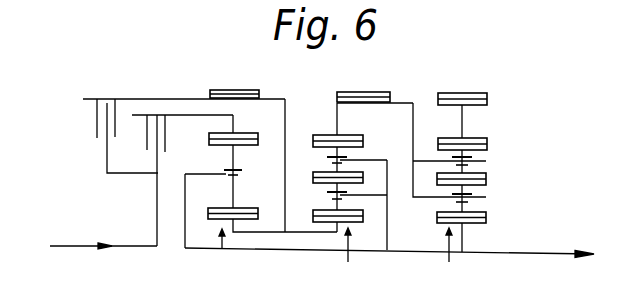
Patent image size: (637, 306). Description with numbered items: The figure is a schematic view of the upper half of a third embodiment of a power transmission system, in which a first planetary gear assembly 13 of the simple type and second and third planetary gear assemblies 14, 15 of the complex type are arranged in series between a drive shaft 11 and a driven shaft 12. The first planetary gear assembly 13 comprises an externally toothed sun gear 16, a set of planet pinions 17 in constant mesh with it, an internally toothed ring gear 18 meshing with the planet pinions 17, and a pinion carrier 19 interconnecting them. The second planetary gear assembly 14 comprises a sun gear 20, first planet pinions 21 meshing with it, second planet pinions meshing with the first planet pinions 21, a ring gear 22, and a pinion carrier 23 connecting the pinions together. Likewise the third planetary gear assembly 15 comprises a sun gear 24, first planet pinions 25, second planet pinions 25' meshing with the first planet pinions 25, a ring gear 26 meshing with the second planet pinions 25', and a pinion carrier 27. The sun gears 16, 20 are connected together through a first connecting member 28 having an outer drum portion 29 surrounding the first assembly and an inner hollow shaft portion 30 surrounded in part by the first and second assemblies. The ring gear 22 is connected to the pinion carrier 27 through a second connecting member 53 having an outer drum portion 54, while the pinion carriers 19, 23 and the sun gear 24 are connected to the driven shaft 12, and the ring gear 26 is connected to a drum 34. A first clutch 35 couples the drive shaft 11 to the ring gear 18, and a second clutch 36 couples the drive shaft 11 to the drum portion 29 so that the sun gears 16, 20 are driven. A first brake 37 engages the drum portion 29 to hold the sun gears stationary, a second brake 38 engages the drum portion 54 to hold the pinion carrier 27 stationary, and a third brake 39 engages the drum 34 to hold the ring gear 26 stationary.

The drive shaft 11 is at (67, 247).
The driven shaft 12 is at (543, 255).
The first planetary gear assembly 13 is at (217, 258).
The second planetary gear assembly 14 is at (346, 257).
The third planetary gear assembly 15 is at (441, 261).
The sun gear 16 is at (213, 222).
The planet pinions 17 is at (249, 146).
The ring gear 18 is at (248, 133).
The pinion carrier 19 is at (186, 188).
The sun gear 20 is at (358, 223).
The first planet pinions 21 is at (311, 150).
The ring gear 22 is at (318, 134).
The pinion carrier 23 is at (388, 242).
The sun gear 24 is at (487, 220).
The first planet pinions 25 is at (484, 192).
The second planet pinions 25' is at (500, 163).
The ring gear 26 is at (488, 141).
The pinion carrier 27 is at (414, 119).
The first connecting member 28 is at (287, 232).
The outer drum portion 29 is at (187, 99).
The inner hollow shaft portion 30 is at (250, 234).
The drum 34 is at (478, 108).
The first clutch 35 is at (165, 155).
The second clutch 36 is at (110, 145).
The first brake 37 is at (236, 90).
The second brake 38 is at (371, 86).
The third brake 39 is at (480, 93).
The second connecting member 53 is at (411, 133).
The outer drum portion 54 is at (412, 103).